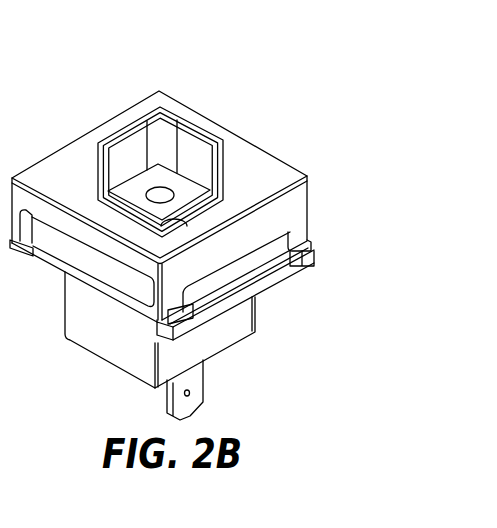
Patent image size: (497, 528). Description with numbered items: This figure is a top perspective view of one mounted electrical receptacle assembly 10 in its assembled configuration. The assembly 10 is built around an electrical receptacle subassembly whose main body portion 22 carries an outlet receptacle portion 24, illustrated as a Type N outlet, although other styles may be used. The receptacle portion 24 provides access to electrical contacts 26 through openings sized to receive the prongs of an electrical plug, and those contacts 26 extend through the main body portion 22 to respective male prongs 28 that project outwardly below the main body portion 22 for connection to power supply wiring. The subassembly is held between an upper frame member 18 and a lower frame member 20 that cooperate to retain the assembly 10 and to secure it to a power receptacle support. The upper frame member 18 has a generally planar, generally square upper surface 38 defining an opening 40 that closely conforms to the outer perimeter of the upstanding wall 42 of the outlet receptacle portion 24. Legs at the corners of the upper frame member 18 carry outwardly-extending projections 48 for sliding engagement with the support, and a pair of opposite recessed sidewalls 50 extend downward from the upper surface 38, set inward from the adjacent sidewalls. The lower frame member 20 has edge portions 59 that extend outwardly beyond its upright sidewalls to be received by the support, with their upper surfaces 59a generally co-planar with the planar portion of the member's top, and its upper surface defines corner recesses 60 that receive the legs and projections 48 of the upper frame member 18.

The electrical receptacle assembly 10 is at (241, 78).
The upper frame member 18 is at (265, 157).
The lower frame member 20 is at (40, 259).
The main body portion 22 is at (256, 309).
The outlet receptacle portion 24 is at (128, 140).
The electrical contacts 26 is at (145, 194).
The male prongs 28 is at (203, 388).
The upper surface 38 is at (82, 150).
The opening 40 is at (223, 165).
The upstanding wall 42 is at (180, 110).
The outwardly-extending projection 48 is at (291, 249).
The recessed sidewalls 50 is at (83, 257).
The edge portions 59 is at (289, 283).
The upper surfaces of edge portions 59a is at (248, 280).
The corner recesses 60 is at (311, 251).